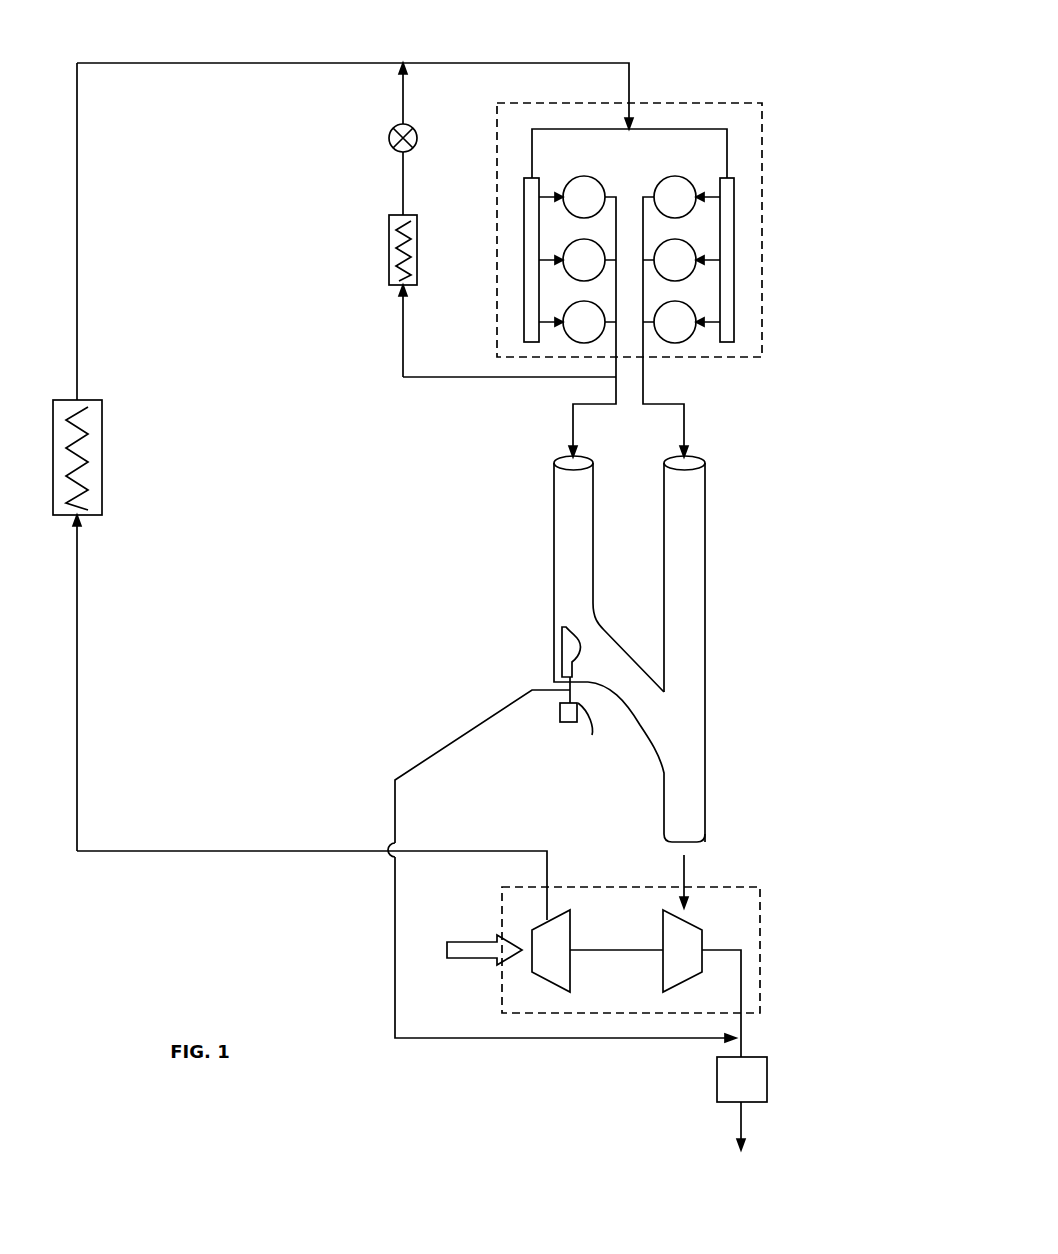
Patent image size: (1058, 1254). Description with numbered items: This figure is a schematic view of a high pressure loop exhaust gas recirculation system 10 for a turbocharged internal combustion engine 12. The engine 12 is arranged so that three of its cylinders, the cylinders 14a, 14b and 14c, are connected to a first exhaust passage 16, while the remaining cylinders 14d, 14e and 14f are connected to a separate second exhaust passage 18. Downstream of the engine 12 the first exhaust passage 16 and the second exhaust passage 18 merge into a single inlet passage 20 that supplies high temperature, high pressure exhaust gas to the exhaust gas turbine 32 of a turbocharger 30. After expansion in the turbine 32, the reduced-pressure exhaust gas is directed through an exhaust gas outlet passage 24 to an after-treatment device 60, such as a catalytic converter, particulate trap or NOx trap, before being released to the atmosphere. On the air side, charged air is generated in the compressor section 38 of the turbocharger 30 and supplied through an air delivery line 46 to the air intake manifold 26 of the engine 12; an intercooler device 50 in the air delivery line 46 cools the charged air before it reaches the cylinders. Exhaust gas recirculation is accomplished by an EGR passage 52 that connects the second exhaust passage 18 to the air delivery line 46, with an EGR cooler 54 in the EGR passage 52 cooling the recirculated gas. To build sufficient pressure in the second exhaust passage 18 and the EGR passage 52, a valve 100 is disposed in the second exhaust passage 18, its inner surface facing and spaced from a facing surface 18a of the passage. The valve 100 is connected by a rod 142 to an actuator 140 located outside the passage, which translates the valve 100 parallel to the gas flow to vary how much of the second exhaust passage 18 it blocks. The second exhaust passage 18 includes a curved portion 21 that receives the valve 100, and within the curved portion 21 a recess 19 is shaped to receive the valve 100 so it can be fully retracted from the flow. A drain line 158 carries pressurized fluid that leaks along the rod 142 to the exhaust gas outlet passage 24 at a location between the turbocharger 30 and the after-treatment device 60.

The high pressure loop exhaust gas recirculation system 10 is at (324, 154).
The turbocharged internal combustion engine 12 is at (743, 103).
The air intake manifold 26 is at (665, 128).
The cylinder 14a is at (678, 192).
The cylinder 14b is at (680, 251).
The cylinder 14c is at (677, 343).
The cylinder 14d is at (578, 188).
The cylinder 14e is at (578, 250).
The cylinder 14f is at (578, 313).
The EGR cooler 54 is at (389, 240).
The intercooler device 50 is at (102, 455).
The EGR passage 52 is at (416, 378).
The second exhaust passage 18 is at (567, 528).
The first exhaust passage 16 is at (687, 537).
The facing surface 18a is at (603, 630).
The curved portion 21 is at (620, 667).
The inlet passage 20 is at (692, 807).
The valve 100 is at (565, 656).
The recess 19 is at (554, 681).
The drain line 158 is at (433, 755).
The actuator 140 is at (560, 712).
The rod 142 is at (592, 735).
The air delivery line 46 is at (225, 846).
The turbocharger 30 is at (763, 928).
The compressor section 38 is at (557, 973).
The exhaust gas turbine 32 is at (687, 930).
The exhaust gas outlet passage 24 is at (742, 988).
The after-treatment device 60 is at (755, 1078).